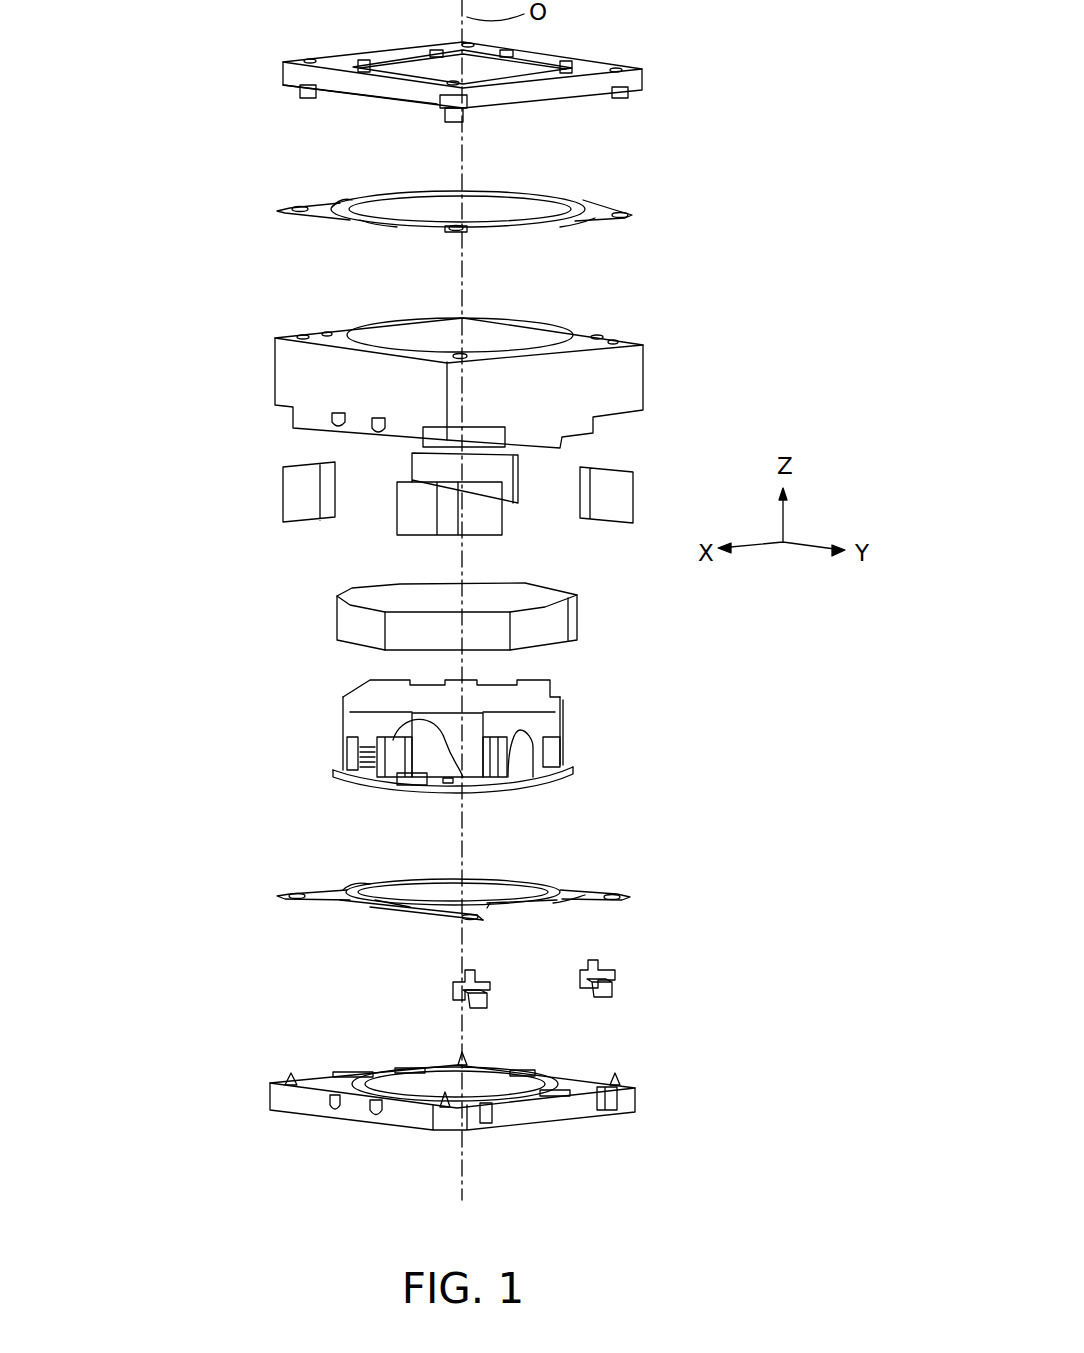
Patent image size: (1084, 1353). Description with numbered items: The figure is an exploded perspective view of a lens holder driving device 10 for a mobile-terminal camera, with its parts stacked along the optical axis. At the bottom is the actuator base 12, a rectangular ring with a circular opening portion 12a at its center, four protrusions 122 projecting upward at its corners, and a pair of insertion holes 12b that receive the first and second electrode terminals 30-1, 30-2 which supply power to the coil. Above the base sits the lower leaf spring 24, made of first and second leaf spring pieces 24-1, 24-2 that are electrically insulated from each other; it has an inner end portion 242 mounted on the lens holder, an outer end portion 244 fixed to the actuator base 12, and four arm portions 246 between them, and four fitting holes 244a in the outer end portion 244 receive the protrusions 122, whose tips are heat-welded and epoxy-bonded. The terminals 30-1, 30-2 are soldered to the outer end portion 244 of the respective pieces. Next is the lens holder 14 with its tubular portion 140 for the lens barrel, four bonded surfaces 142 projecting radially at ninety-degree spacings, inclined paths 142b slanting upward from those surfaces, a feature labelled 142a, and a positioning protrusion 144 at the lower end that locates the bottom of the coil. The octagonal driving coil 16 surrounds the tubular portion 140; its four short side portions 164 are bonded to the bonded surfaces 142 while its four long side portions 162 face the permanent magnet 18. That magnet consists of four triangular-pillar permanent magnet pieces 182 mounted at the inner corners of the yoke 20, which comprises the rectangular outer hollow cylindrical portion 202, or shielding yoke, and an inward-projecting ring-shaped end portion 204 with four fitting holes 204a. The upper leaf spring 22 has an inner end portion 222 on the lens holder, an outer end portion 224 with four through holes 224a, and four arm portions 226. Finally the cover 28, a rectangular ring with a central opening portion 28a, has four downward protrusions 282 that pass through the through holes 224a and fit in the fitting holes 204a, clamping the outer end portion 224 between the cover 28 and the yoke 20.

The lens holder driving device 10 is at (741, 337).
The actuator base 12 is at (472, 1106).
The circular opening portion 12a is at (520, 1066).
The insertion holes 12b is at (487, 1105).
The protrusions 122 is at (290, 1075).
The lens holder 14 is at (451, 752).
The tubular portion 140 is at (433, 770).
The bonded surfaces 142 is at (340, 737).
The protrusion 142a is at (370, 770).
The inclined paths 142b is at (343, 727).
The positioning protrusion 144 is at (338, 770).
The driving coil 16 is at (460, 601).
The long side portions 162 is at (453, 575).
The short side portions 164 is at (380, 580).
The permanent magnet 18 is at (647, 470).
The permanent magnet pieces 182 is at (287, 490).
The yoke 20 is at (455, 357).
The outer hollow cylindrical portion 202 is at (288, 368).
The ring-shaped end portion 204 is at (341, 332).
The fitting holes 204a is at (302, 335).
The upper leaf spring 22 is at (459, 221).
The inner end portion 222 is at (360, 200).
The outer end portion 224 is at (285, 210).
The through holes 224a is at (617, 213).
The arm portions 226 is at (334, 206).
The lower leaf spring 24 is at (600, 881).
The first leaf spring piece 24-1 is at (597, 880).
The second leaf spring piece 24-2 is at (377, 917).
The inner end portion 242 is at (393, 884).
The outer end portion 244 is at (567, 887).
The fitting holes 244a is at (465, 880).
The arm portions 246 is at (343, 890).
The cover 28 is at (595, 64).
The opening portion 28a is at (552, 53).
The protrusions 282 is at (300, 94).
The first electrode terminal 30-1 is at (612, 968).
The second electrode terminal 30-2 is at (490, 992).